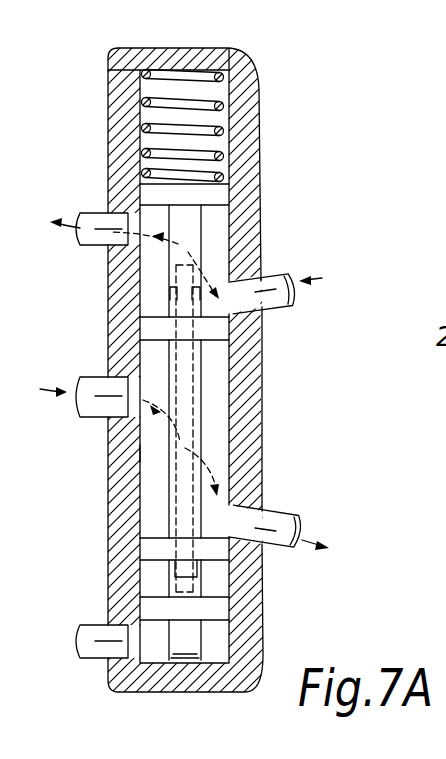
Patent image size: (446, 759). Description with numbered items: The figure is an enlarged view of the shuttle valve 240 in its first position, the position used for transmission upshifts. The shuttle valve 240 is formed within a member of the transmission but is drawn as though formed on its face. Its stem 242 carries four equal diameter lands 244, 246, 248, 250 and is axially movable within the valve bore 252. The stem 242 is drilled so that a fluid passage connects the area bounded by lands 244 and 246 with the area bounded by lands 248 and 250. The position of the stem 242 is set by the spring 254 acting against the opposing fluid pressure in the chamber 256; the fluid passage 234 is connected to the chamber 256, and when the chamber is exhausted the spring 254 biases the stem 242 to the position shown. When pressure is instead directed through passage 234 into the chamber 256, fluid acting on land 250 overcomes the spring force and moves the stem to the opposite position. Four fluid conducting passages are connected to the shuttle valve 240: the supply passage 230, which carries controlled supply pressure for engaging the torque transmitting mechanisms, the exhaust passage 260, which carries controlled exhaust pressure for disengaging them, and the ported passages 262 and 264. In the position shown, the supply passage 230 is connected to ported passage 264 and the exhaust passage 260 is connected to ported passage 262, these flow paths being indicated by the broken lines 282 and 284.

The shuttle valve 240 is at (263, 399).
The spring 254 is at (226, 106).
The land 244 is at (216, 195).
The stem 242 is at (201, 230).
The land 246 is at (220, 342).
The land 248 is at (160, 545).
The land 250 is at (221, 612).
The chamber 256 is at (160, 650).
The exhaust passage 260 is at (93, 213).
The supply passage 230 is at (98, 377).
The fluid passage 234 is at (95, 630).
The ported passage 262 is at (275, 275).
The ported passage 264 is at (280, 508).
The broken line 282 is at (152, 238).
The broken line 284 is at (205, 468).
The valve bore 252 is at (146, 454).